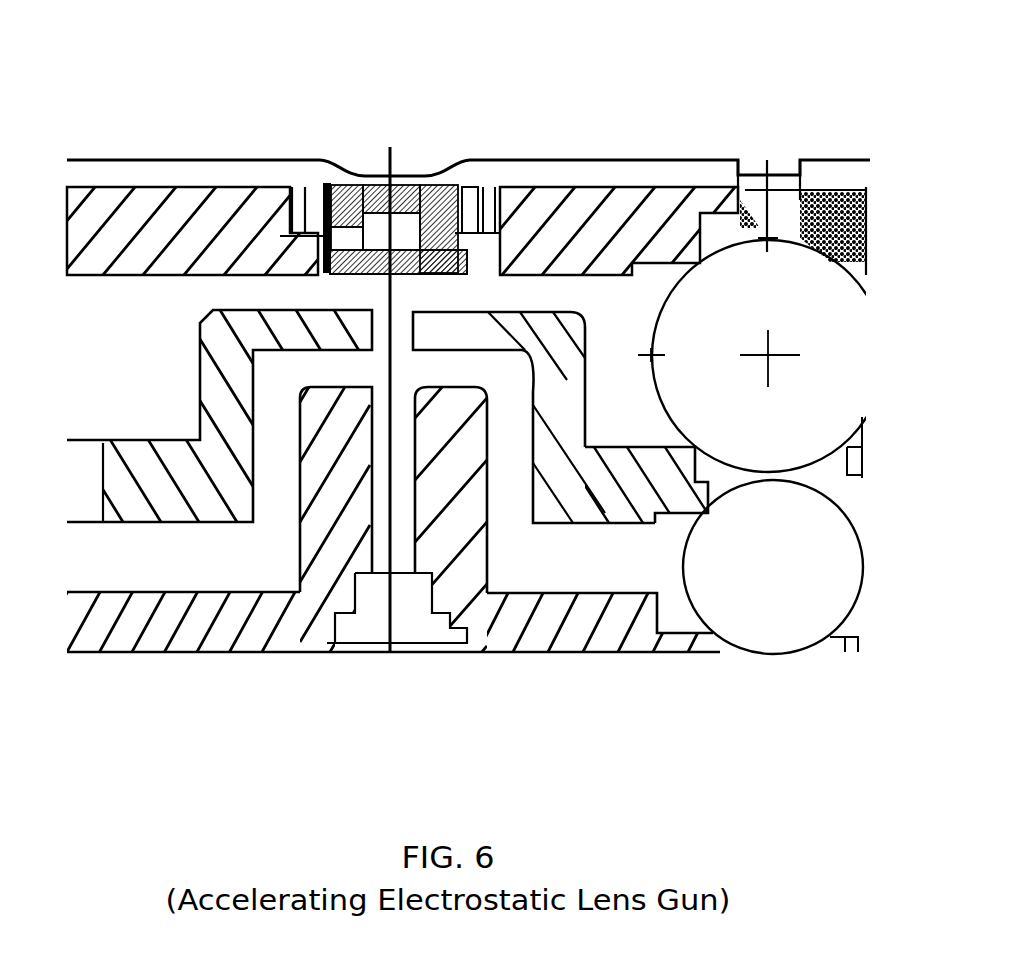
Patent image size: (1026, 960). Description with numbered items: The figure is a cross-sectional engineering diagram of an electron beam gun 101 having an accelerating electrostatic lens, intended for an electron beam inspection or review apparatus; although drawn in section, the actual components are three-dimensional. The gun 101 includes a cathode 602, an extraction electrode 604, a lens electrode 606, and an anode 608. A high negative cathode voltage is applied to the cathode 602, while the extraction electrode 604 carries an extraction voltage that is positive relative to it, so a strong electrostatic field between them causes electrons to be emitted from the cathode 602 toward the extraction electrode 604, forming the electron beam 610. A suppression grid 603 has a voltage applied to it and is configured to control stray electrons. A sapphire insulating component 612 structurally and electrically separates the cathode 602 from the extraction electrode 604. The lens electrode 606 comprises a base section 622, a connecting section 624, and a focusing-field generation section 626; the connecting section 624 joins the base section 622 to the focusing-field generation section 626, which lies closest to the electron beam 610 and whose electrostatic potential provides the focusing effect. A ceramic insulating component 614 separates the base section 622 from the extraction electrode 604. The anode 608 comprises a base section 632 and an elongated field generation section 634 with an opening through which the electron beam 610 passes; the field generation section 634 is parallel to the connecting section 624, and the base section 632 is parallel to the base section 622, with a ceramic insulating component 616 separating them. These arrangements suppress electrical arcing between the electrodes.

The electron beam gun 101 is at (812, 867).
The cathode 602 is at (390, 148).
The suppression grid 603 is at (324, 162).
The extraction electrode 604 is at (447, 180).
The lens electrode 606 is at (357, 416).
The anode 608 is at (354, 507).
The electron beam 610 is at (470, 470).
The sapphire insulating component 612 is at (778, 162).
The ceramic insulating component 614 is at (761, 356).
The ceramic insulating component 616 is at (773, 535).
The base section 622 is at (637, 485).
The connecting section 624 is at (594, 437).
The focusing-field generation section 626 is at (499, 352).
The base section 632 is at (378, 622).
The field generation section 634 is at (451, 501).